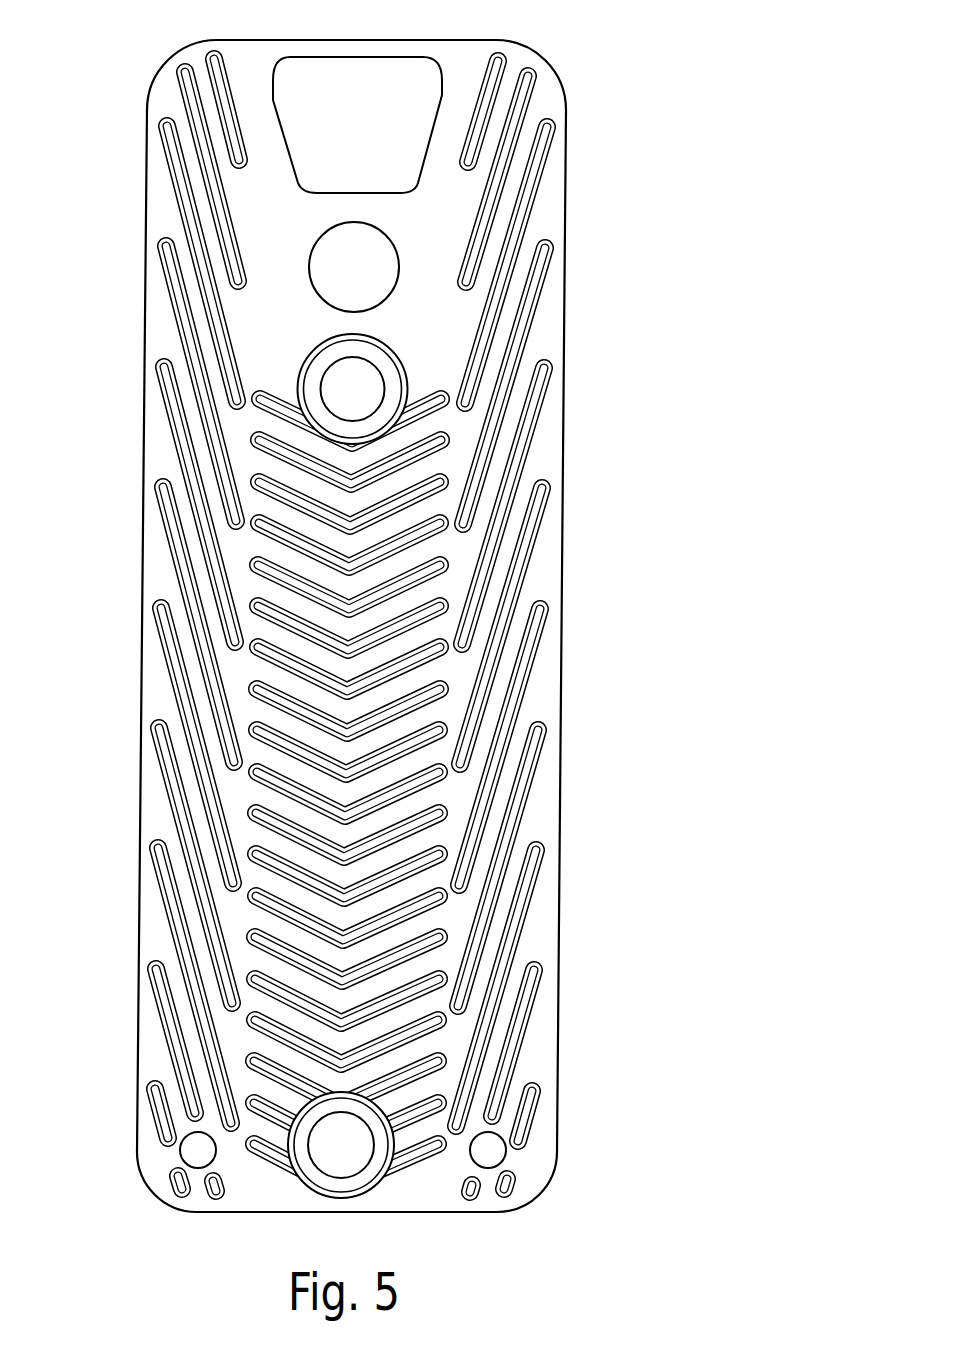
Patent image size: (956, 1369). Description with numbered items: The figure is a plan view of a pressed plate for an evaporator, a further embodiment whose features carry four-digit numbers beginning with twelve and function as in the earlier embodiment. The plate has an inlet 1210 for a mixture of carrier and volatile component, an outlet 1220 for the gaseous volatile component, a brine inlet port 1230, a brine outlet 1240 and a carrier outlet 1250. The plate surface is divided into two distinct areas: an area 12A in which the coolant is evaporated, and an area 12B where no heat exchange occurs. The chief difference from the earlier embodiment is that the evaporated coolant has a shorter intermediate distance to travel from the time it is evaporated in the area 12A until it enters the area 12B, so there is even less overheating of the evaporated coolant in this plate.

The evaporation area 12A is at (420, 632).
The non-heat-exchange area 12B is at (537, 469).
The inlet 1210 is at (399, 258).
The outlet for gaseous volatile component 1220 is at (440, 72).
The brine inlet port 1230 is at (378, 1142).
The brine outlet 1240 is at (385, 375).
The carrier outlet 1250 is at (180, 1153).